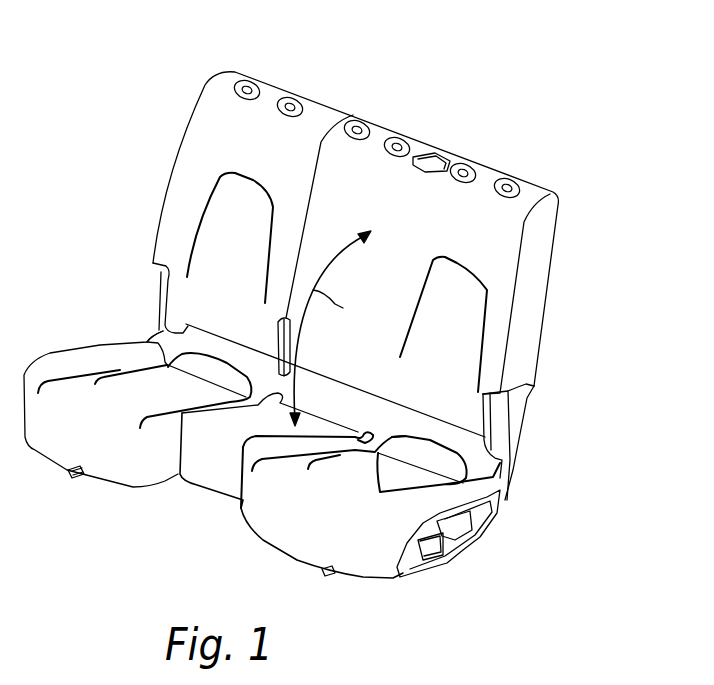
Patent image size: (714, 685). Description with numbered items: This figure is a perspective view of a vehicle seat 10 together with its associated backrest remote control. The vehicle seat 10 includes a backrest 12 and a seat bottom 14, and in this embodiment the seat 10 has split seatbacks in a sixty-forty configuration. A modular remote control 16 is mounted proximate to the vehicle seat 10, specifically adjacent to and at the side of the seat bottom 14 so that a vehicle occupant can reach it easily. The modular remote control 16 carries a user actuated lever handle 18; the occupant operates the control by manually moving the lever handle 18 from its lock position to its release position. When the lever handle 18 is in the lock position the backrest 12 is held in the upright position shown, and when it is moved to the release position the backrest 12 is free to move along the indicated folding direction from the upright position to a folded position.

The vehicle seat 10 is at (123, 106).
The backrest 12 is at (503, 299).
The seat bottom 14 is at (360, 543).
The modular remote control 16 is at (482, 544).
The user actuated lever handle 18 is at (433, 557).